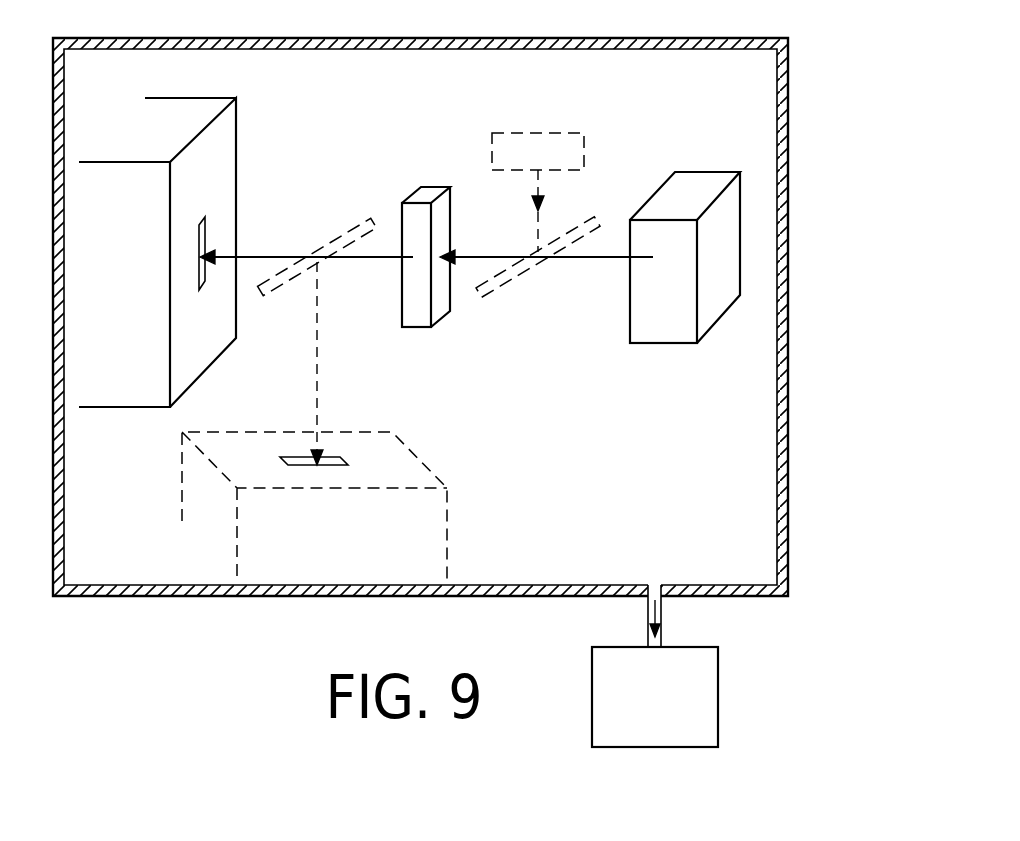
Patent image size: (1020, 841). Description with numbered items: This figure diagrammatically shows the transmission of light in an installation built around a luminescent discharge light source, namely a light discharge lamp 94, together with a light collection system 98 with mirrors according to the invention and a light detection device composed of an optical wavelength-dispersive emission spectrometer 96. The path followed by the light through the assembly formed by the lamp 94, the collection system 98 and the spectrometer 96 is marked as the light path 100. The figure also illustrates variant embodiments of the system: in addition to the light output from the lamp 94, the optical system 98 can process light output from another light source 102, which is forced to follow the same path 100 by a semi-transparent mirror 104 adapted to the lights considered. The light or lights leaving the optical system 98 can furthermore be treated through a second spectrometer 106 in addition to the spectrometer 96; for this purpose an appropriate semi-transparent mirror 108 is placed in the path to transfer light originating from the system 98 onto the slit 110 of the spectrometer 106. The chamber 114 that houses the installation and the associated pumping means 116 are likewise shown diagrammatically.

The light discharge lamp 94 is at (668, 330).
The optical wavelength-dispersive emission spectrometer 96 is at (125, 397).
The light collection system 98 is at (414, 316).
The light path 100 is at (605, 262).
The another light source 102 is at (553, 140).
The semi-transparent mirror 104 is at (514, 268).
The spectrometer 106 is at (447, 492).
The semi-transparent mirror 108 is at (348, 238).
The slit 110 is at (292, 455).
The chamber 114 is at (167, 590).
The pumping means 116 is at (712, 697).